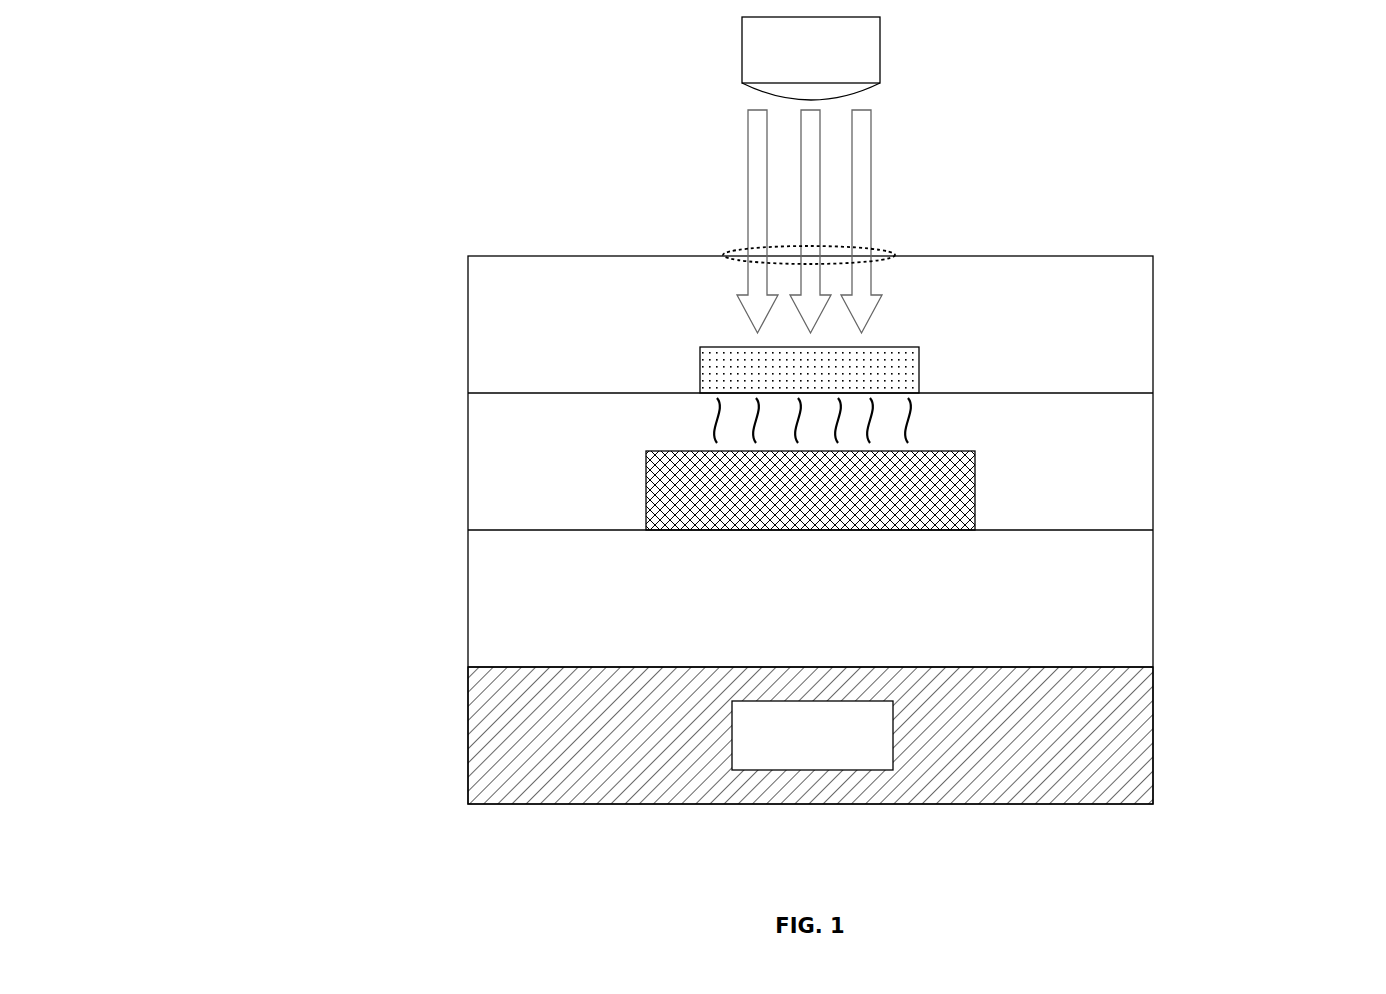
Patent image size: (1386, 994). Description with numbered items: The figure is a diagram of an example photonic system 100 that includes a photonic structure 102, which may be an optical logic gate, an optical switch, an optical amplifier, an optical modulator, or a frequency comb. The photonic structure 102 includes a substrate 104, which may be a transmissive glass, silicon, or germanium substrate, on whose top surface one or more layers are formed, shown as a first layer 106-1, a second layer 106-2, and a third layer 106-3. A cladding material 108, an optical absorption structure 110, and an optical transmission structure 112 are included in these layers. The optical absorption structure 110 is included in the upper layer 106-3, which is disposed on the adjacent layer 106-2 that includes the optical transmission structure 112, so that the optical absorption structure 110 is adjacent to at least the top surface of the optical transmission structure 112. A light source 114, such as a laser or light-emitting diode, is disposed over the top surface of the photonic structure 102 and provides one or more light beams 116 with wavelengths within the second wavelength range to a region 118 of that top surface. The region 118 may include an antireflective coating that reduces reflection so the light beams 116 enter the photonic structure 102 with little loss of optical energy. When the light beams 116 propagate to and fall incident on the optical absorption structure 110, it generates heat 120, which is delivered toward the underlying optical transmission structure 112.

The photonic system 100 is at (330, 50).
The photonic structure 102 is at (435, 238).
The substrate 104 is at (810, 735).
The layer 106-1 is at (452, 608).
The layer 106-2 is at (452, 461).
The layer 106-3 is at (452, 324).
The cladding material 108 is at (526, 573).
The optical absorption structure 110 is at (870, 373).
The optical transmission structure 112 is at (880, 480).
The light source 114 is at (838, 51).
The light beams 116 is at (760, 208).
The region 118 is at (738, 250).
The heat 120 is at (918, 416).